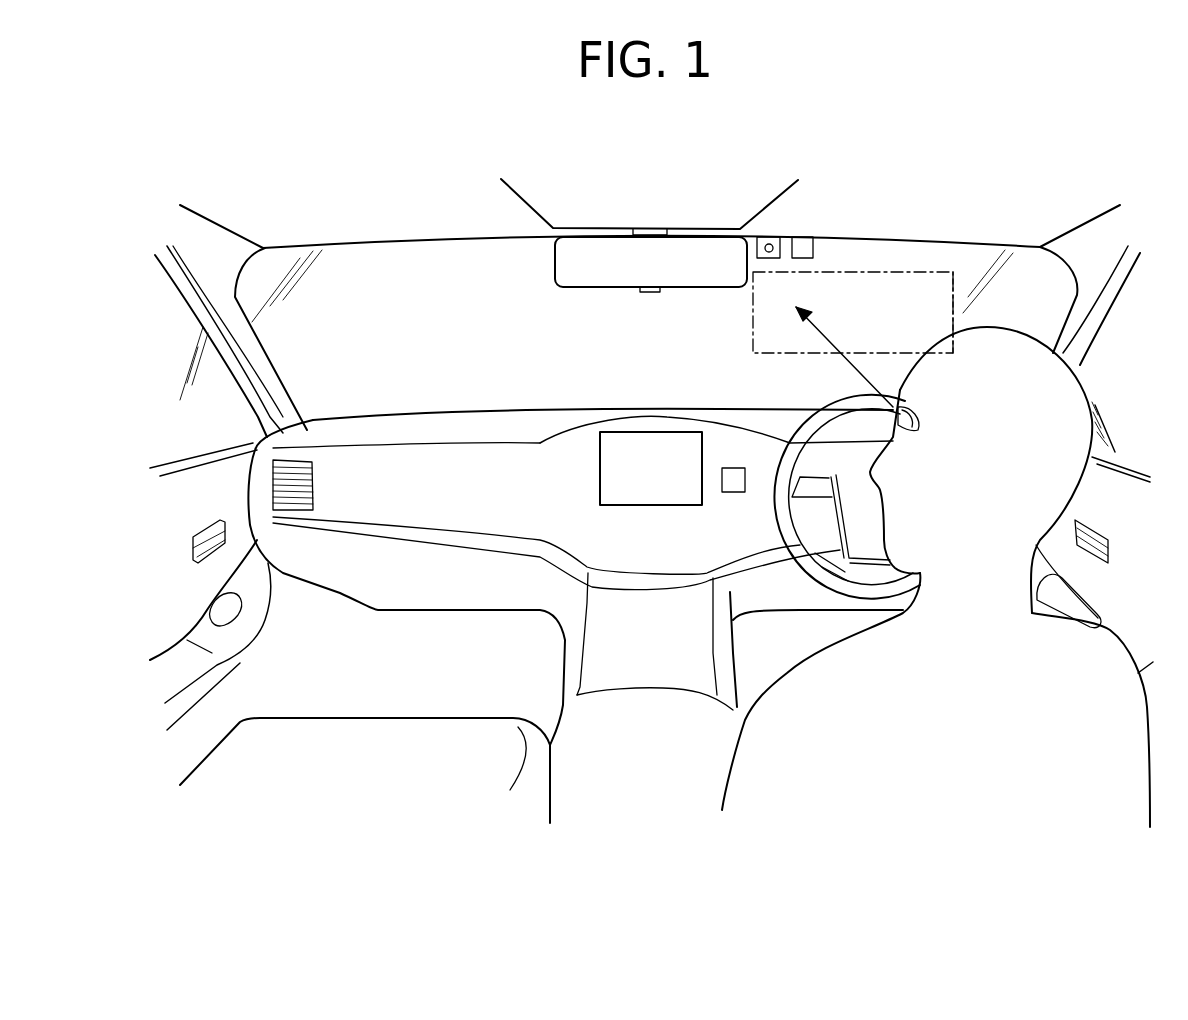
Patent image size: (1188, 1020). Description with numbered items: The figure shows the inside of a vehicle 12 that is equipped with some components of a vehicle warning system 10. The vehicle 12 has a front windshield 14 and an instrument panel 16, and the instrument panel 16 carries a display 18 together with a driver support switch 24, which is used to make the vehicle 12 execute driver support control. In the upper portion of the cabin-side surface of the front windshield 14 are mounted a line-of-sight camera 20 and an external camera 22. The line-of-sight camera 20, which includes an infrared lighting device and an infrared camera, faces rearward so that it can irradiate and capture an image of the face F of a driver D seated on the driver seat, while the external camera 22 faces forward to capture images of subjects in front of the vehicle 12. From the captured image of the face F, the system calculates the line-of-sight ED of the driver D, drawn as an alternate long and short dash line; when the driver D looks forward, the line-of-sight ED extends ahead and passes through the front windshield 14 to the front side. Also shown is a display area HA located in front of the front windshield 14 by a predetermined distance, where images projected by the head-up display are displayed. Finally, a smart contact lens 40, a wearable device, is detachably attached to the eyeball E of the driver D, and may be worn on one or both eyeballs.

The vehicle warning system 10 is at (663, 347).
The vehicle 12 is at (895, 211).
The front windshield 14 is at (413, 252).
The instrument panel 16 is at (420, 453).
The display 18 is at (645, 507).
The line-of-sight camera 20 is at (767, 237).
The external camera 22 is at (813, 243).
The driver support switch 24 is at (735, 468).
The smart contact lens 40 is at (903, 428).
The line-of-sight ED is at (820, 331).
The display area HA is at (950, 272).
The driver D is at (1092, 383).
The eyeball E is at (920, 417).
The face F is at (903, 470).